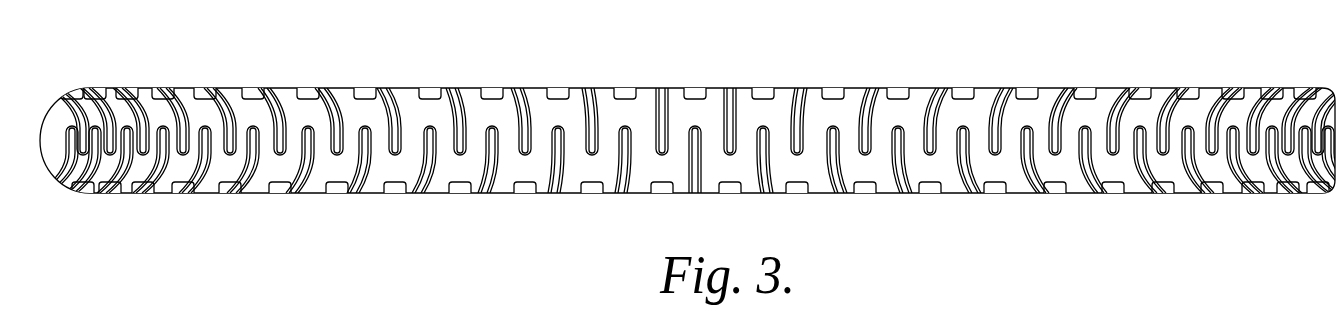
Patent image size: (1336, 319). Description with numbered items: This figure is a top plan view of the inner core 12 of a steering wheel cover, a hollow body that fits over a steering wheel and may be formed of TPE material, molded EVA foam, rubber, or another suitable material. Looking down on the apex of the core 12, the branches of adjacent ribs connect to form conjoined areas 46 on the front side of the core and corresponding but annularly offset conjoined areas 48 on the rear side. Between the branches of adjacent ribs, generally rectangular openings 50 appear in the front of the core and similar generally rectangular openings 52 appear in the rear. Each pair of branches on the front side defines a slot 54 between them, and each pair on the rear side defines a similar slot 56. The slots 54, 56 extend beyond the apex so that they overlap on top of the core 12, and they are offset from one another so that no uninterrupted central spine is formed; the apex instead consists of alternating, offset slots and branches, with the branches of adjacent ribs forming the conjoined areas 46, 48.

The inner core 12 is at (848, 63).
The conjoined areas 46 is at (976, 229).
The conjoined areas 48 is at (1073, 113).
The openings 50 is at (417, 192).
The openings 52 is at (497, 90).
The slot 54 is at (563, 192).
The slot 56 is at (600, 90).